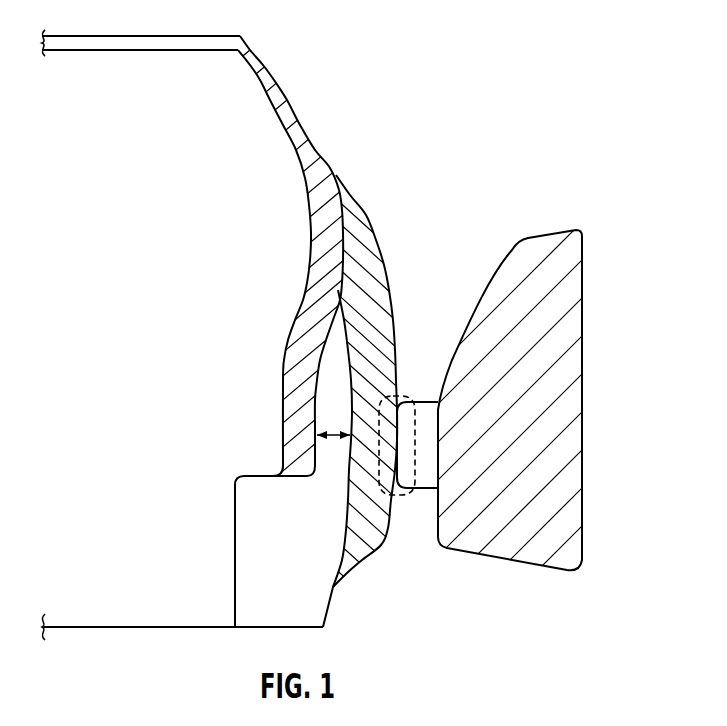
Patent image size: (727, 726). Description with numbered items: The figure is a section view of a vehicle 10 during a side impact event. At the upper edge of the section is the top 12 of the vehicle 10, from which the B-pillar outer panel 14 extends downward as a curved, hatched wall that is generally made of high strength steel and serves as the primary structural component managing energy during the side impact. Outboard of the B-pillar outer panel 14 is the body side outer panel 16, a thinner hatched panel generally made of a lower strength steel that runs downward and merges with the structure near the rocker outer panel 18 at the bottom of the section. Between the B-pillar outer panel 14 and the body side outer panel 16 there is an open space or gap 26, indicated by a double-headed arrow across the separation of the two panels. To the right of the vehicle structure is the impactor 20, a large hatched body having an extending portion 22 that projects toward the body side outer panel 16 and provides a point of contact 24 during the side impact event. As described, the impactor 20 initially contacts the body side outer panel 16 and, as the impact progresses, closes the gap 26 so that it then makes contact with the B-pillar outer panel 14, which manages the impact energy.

The vehicle 10 is at (412, 57).
The top 12 is at (112, 46).
The B-pillar outer panel 14 is at (298, 110).
The body side outer panel 16 is at (363, 547).
The rocker outer panel 18 is at (306, 610).
The impactor 20 is at (560, 337).
The extending portion 22 is at (432, 410).
The point of contact 24 is at (405, 493).
The gap 26 is at (333, 432).